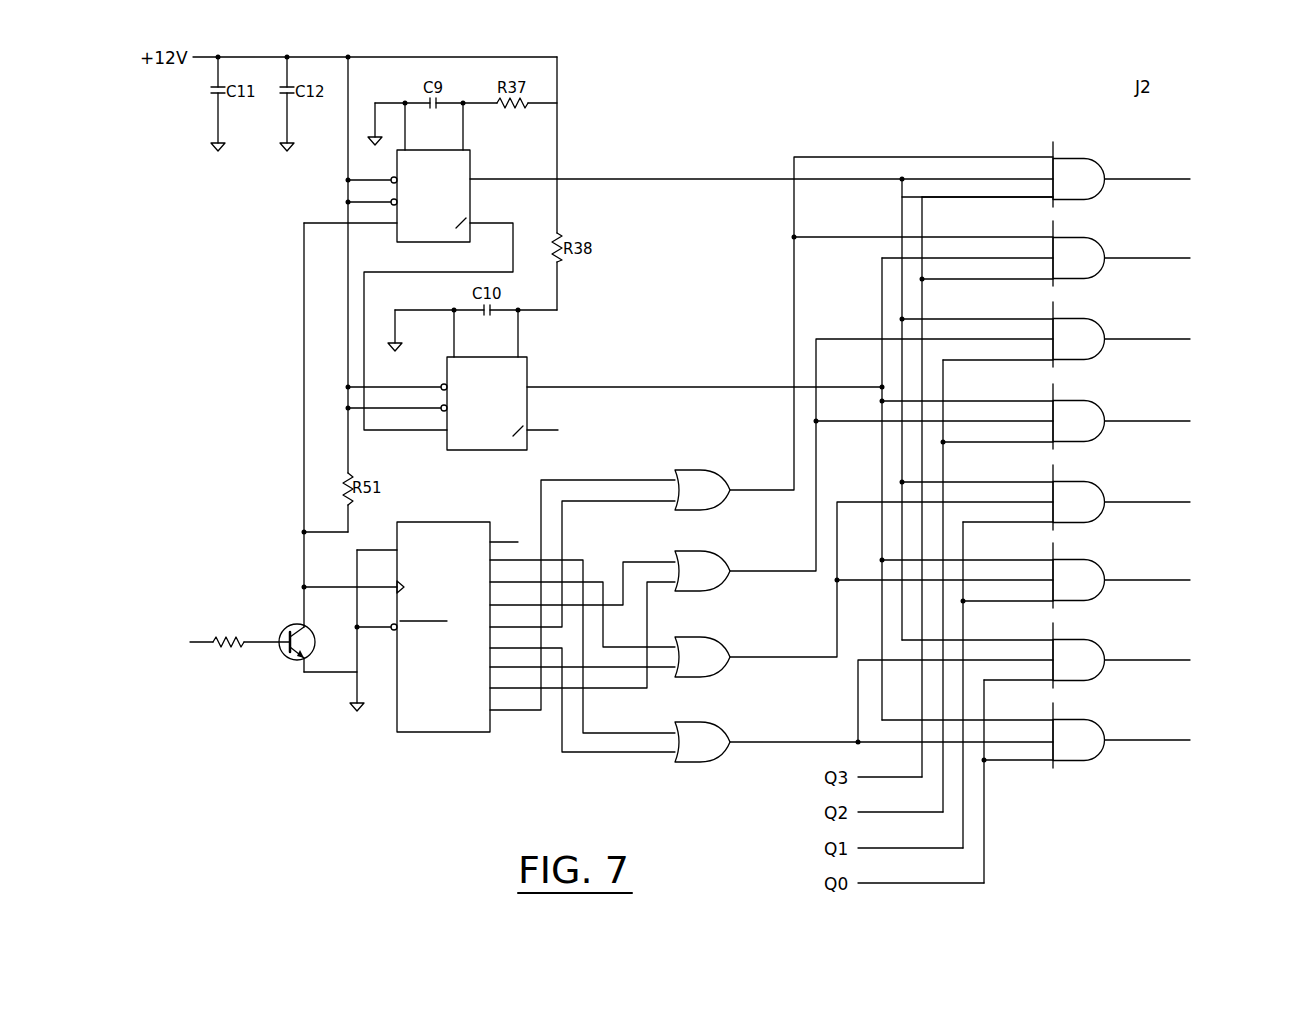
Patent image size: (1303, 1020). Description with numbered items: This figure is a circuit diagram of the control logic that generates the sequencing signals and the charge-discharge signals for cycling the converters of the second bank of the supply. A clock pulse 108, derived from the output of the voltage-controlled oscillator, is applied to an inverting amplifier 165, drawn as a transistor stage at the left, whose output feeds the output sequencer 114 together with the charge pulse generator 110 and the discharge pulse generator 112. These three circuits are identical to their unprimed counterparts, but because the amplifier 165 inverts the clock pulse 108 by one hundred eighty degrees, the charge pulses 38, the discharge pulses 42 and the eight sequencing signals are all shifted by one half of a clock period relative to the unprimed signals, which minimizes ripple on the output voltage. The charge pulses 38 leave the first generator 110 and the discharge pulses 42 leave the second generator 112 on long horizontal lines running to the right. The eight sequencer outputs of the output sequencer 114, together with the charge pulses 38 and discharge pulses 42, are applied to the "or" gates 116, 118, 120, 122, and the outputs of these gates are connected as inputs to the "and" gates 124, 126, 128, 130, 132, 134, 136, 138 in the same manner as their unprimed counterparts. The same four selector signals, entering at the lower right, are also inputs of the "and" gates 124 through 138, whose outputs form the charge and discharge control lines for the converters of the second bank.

The charge pulses 38 is at (635, 179).
The discharge pulses 42 is at (633, 386).
The clock pulse 108 is at (167, 658).
The charge pulse generator 110 is at (470, 150).
The discharge pulse generator 112 is at (527, 357).
The output sequencer 114 is at (427, 732).
The "or" gate 116 is at (715, 505).
The "or" gate 118 is at (715, 587).
The "or" gate 120 is at (715, 672).
The "or" gate 122 is at (690, 760).
The "and" gate 124 is at (1100, 160).
The "and" gate 126 is at (1100, 237).
The "and" gate 128 is at (1100, 318).
The "and" gate 130 is at (1100, 400).
The "and" gate 132 is at (1100, 481).
The "and" gate 134 is at (1100, 559).
The "and" gate 136 is at (1100, 639).
The "and" gate 138 is at (1100, 719).
The inverting amplifier 165 is at (287, 657).